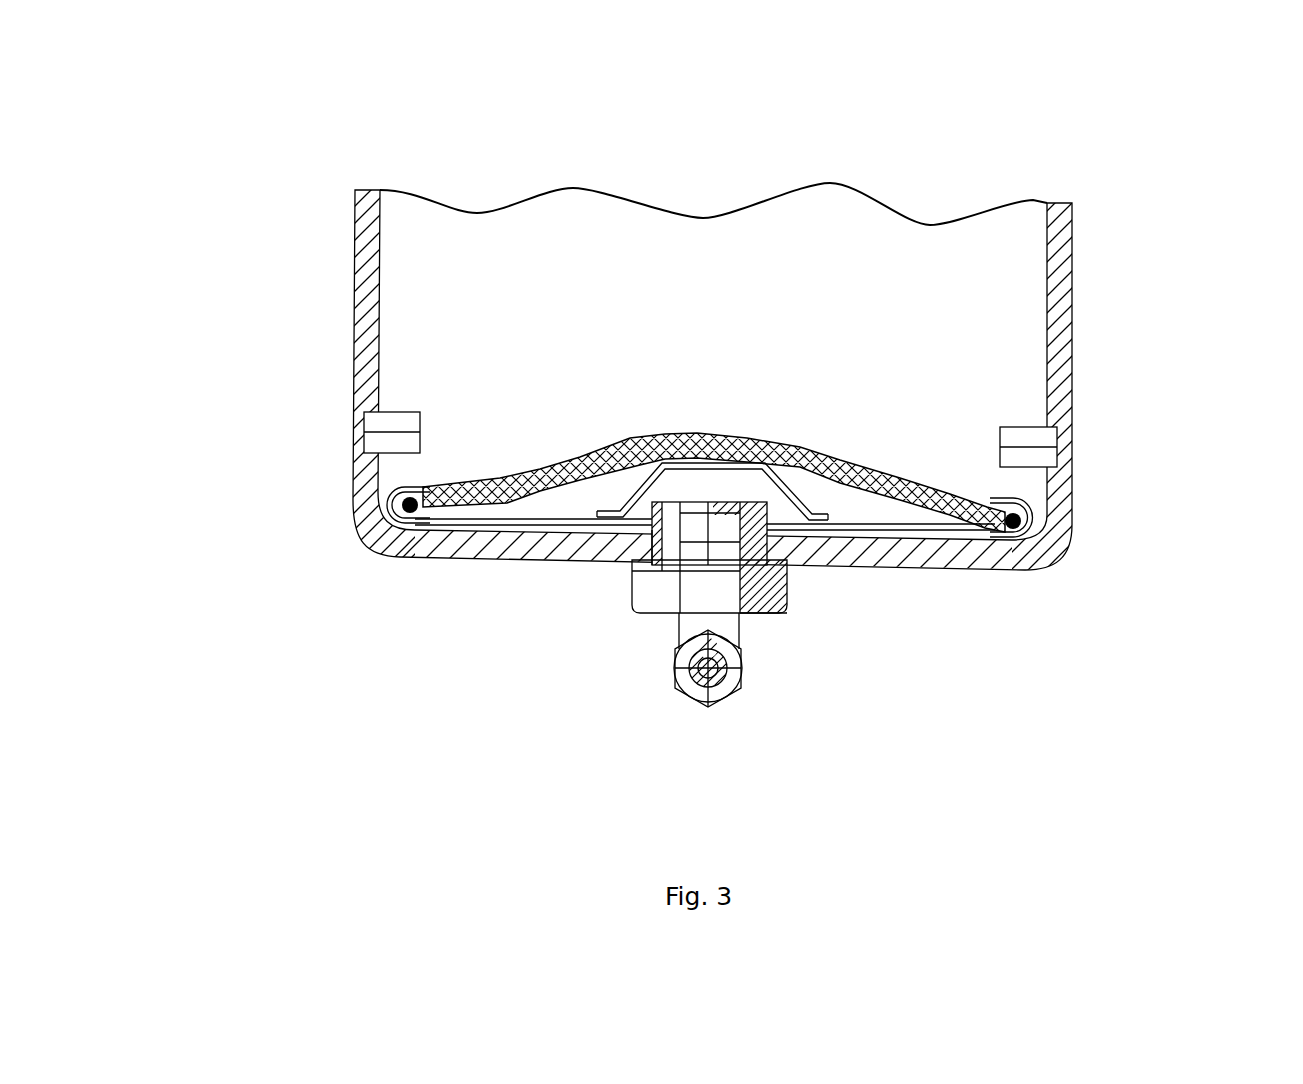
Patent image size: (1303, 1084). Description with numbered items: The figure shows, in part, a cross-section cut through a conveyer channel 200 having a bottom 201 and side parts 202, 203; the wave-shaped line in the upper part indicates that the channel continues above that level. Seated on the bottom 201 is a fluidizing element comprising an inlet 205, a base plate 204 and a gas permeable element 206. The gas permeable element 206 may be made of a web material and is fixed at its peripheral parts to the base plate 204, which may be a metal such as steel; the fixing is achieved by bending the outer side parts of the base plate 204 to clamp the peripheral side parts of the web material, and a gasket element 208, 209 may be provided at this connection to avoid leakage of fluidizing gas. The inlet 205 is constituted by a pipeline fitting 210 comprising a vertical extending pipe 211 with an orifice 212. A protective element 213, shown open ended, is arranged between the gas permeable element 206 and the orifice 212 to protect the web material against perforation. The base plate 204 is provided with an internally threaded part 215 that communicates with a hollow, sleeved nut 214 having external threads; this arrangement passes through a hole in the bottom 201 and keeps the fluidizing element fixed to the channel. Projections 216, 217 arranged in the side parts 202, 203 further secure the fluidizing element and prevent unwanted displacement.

The conveyer channel 200 is at (1018, 627).
The bottom 201 is at (470, 558).
The side part 202 is at (1072, 248).
The side part 203 is at (357, 255).
The base plate 204 is at (515, 557).
The inlet 205 is at (763, 615).
The gas permeable element 206 is at (582, 447).
The gasket element 208 is at (1035, 525).
The gasket element 209 is at (365, 522).
The pipeline fitting 210 is at (685, 688).
The vertical extending pipe 211 is at (692, 620).
The orifice 212 is at (712, 508).
The protective element 213 is at (670, 460).
The hollow, sleeved nut 214 is at (787, 588).
The internally threaded part 215 is at (652, 530).
The projection 216 is at (1012, 435).
The projection 217 is at (410, 423).